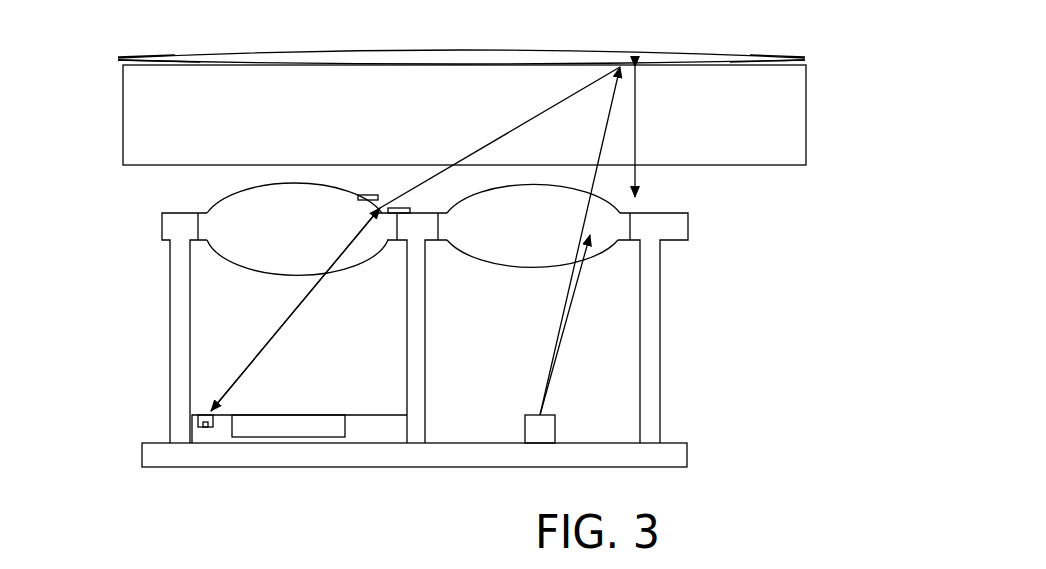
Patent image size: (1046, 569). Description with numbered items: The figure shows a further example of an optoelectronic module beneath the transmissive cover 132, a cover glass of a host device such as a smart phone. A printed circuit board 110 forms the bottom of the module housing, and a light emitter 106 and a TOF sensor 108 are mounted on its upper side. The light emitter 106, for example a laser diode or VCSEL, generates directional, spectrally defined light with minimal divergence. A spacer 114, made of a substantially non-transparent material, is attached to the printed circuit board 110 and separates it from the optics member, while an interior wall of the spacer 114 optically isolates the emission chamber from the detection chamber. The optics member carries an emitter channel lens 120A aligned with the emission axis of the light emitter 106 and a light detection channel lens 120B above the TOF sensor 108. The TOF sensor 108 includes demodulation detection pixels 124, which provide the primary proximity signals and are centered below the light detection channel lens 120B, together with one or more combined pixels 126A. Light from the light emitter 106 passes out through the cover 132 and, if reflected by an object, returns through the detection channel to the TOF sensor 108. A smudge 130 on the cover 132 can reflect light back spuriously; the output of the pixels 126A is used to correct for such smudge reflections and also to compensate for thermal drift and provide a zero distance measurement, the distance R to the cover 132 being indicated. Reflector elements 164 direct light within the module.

The smudge 130 is at (677, 52).
The transmissive cover 132 is at (802, 110).
The reflector plates 164 is at (365, 193).
The light detection channel lens 120B is at (250, 263).
The emitter channel lens 120A is at (600, 253).
The spacer 114 is at (170, 395).
The printed circuit board 110 is at (717, 425).
The TOF sensor 108 is at (377, 433).
The demodulation detection pixels 124 is at (292, 415).
The combined reference and spurious-reflection detection pixels 126A is at (207, 427).
The light emitter 106 is at (555, 428).
The distance R is at (649, 132).